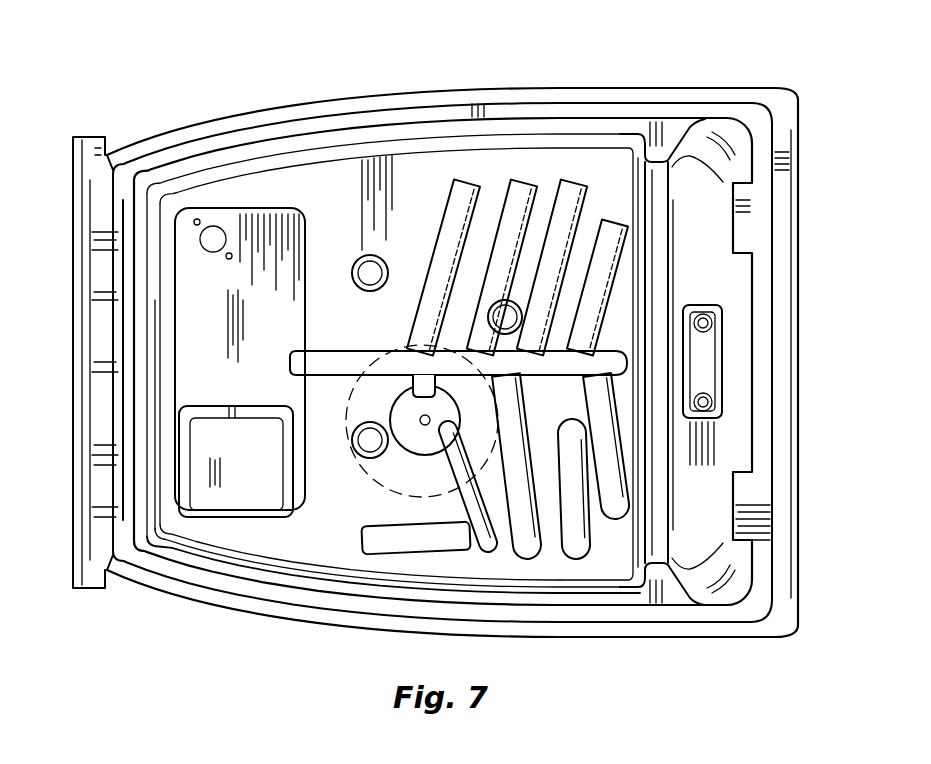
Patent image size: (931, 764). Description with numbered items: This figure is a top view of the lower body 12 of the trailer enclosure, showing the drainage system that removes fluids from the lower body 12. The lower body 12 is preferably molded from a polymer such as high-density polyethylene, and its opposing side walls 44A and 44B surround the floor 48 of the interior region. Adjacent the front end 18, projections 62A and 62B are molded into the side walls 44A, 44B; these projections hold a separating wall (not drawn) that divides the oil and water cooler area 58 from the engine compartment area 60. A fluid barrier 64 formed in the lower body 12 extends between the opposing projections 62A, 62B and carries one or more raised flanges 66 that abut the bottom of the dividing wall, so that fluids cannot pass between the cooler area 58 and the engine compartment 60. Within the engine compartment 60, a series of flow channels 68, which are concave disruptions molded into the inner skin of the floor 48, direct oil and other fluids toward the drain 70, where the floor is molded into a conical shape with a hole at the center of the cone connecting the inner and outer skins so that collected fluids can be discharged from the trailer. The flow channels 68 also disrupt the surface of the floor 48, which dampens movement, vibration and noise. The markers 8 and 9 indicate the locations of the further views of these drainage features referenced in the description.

The lower body portion 12 is at (154, 82).
The front end 18 is at (812, 274).
The floor 48 is at (289, 185).
The engine compartment area 60 is at (337, 247).
The flow channels 68 is at (450, 220).
The side wall 44B is at (497, 150).
The side wall 44A is at (602, 580).
The projection 62B is at (670, 140).
The projection 62A is at (657, 560).
The oil and water cooler area 58 is at (700, 183).
The fluid barrier 64 is at (657, 463).
The raised flanges 66 is at (667, 518).
The drain 70 is at (408, 440).
The section arrow 8 is at (386, 485).
The section line 9- 9 is at (63, 420).